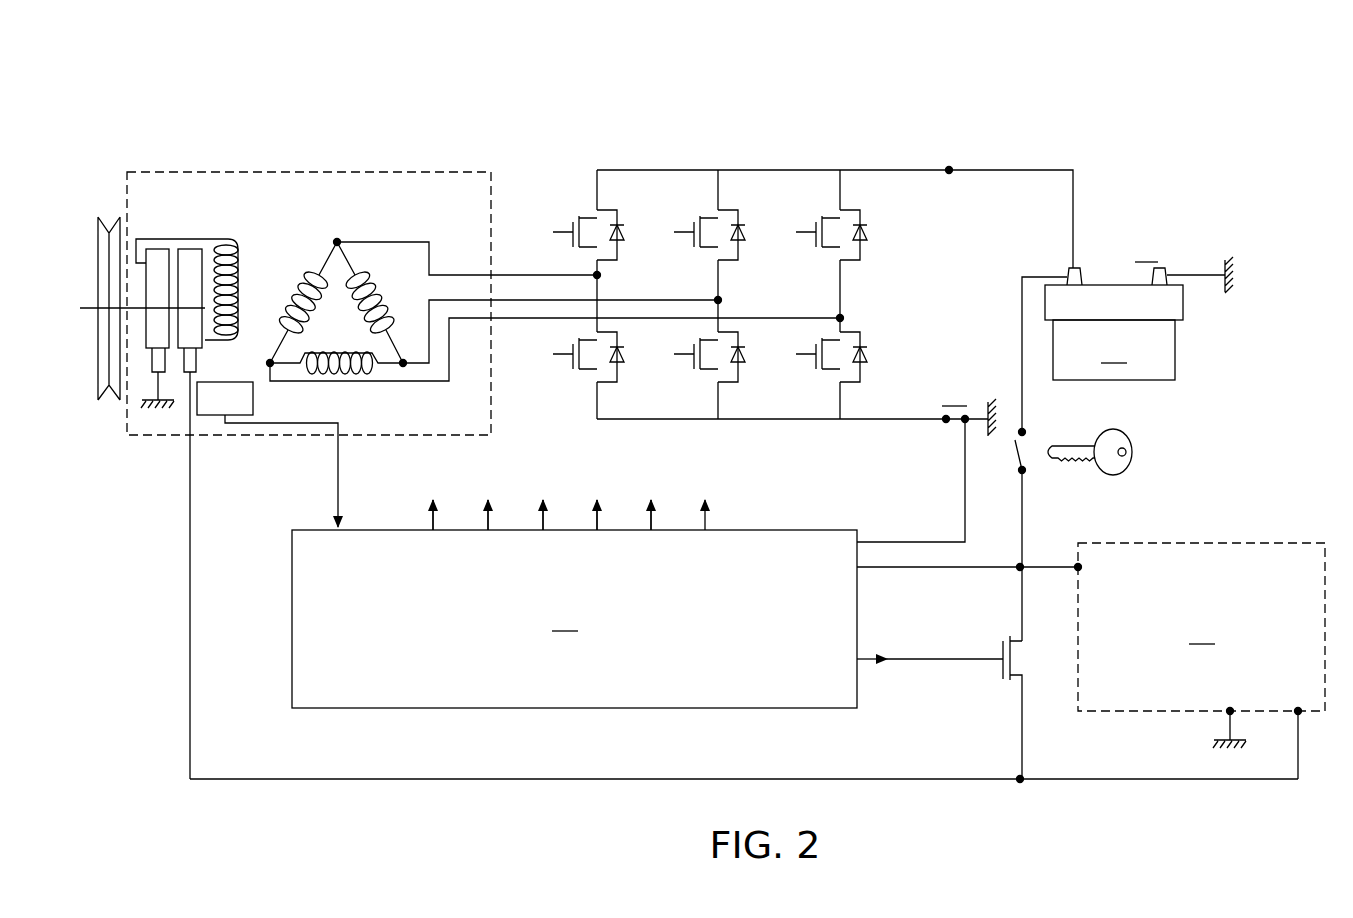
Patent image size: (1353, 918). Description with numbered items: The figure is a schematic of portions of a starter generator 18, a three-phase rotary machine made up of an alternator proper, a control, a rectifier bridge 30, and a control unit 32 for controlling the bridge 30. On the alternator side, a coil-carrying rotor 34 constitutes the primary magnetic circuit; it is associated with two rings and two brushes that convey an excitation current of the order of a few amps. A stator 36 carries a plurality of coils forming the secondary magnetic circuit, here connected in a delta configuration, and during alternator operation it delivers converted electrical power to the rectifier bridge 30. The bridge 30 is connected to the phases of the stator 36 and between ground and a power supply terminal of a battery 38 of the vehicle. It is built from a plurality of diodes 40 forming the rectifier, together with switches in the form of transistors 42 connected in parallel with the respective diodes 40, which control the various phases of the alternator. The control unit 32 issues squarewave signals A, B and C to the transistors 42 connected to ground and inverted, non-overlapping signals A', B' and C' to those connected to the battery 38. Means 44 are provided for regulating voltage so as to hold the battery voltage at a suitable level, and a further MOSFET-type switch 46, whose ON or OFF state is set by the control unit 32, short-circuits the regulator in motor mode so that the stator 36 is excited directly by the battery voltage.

The starter generator 18 is at (731, 104).
The rectifier bridge 30 is at (793, 266).
The control unit 32 is at (685, 563).
The coil-carrying rotor 34 is at (189, 231).
The stator 36 is at (375, 235).
The battery 38 is at (1139, 313).
The diode 40 is at (619, 252).
The transistor 42 is at (579, 247).
The voltage regulating means 44 is at (1201, 661).
The switch 46 is at (1003, 678).